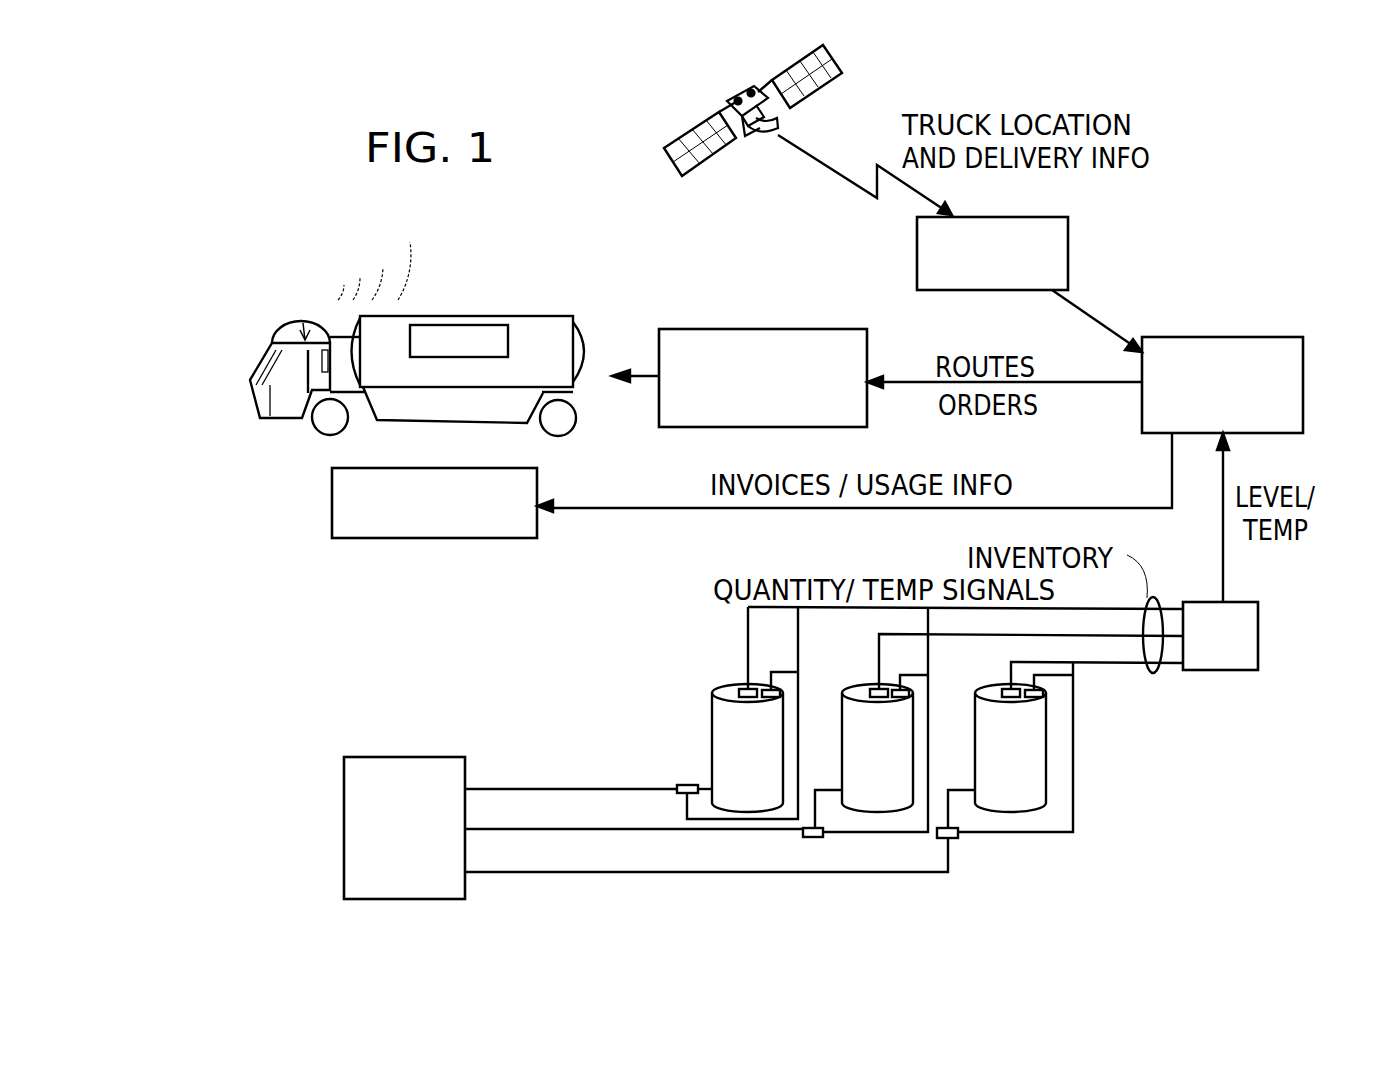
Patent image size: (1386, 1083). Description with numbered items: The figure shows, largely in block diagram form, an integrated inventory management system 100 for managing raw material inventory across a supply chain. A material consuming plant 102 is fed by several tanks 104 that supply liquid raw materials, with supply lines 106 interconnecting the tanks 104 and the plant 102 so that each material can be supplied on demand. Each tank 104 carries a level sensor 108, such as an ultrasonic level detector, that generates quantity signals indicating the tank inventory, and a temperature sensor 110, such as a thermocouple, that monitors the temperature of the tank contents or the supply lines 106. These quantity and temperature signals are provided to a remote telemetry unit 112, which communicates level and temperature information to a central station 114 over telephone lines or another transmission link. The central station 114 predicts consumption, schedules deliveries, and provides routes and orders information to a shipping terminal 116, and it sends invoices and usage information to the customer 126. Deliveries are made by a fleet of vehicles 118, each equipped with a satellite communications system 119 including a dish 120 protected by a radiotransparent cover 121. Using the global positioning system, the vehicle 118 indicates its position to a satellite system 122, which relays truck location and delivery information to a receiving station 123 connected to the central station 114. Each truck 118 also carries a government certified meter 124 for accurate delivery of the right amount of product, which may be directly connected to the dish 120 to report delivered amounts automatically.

The integrated inventory management system 100 is at (633, 635).
The material consuming plant 102 is at (390, 757).
The tanks 104 is at (772, 760).
The supply lines 106 is at (618, 872).
The level sensor 108 is at (740, 687).
The temperature sensor 110 is at (767, 687).
The remote telemetry unit (RTU) 112 is at (1263, 627).
The central station 114 is at (1307, 422).
The shipping terminal 116 is at (759, 329).
The vehicle 118 is at (438, 324).
The satellite communications system 119 is at (270, 305).
The dish 120 is at (317, 330).
The radiotransparent cover 121 is at (327, 327).
The satellite system 122 is at (744, 140).
The receiving station 123 is at (1073, 258).
The meter 124 is at (513, 343).
The customer 126 is at (497, 538).